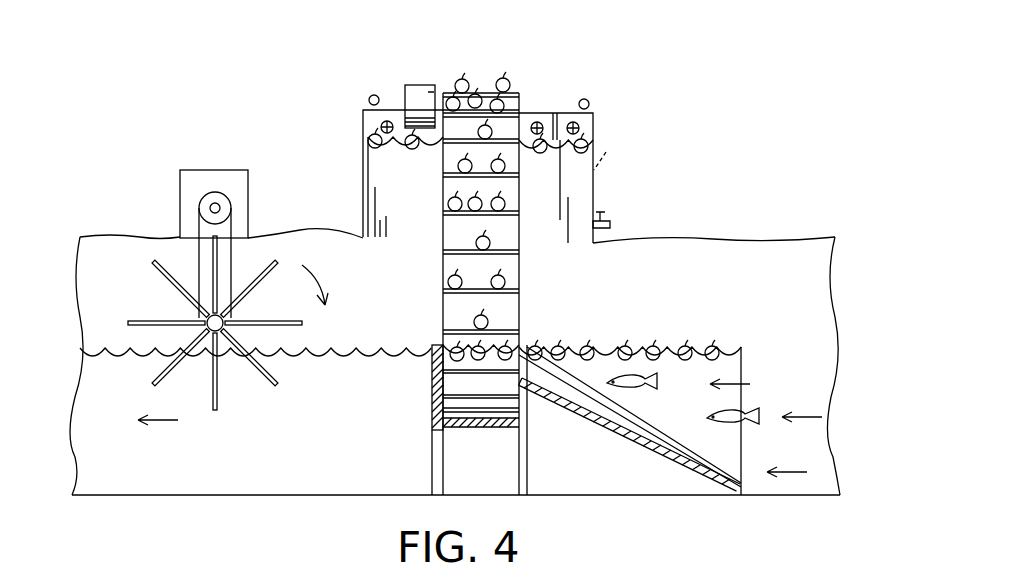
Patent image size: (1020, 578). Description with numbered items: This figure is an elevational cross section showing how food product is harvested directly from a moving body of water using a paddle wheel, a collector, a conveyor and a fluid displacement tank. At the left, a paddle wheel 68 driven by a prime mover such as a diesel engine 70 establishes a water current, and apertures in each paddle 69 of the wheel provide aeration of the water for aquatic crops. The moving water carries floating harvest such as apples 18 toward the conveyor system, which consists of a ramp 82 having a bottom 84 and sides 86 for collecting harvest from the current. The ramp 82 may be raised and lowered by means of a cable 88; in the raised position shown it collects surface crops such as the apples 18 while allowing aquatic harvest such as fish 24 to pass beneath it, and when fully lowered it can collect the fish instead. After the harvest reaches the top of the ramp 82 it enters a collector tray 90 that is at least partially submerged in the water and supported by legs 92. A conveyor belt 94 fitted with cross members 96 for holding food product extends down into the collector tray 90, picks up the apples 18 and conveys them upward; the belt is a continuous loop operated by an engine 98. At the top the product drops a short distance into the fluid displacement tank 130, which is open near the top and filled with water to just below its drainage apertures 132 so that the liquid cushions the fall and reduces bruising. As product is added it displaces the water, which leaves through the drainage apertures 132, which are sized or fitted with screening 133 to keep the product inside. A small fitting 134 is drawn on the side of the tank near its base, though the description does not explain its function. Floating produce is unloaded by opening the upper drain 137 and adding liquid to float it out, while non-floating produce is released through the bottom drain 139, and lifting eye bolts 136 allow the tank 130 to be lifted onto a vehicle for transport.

The apples 18 is at (500, 82).
The fish 24 is at (612, 374).
The paddle wheel 68 is at (203, 316).
The paddle 69 is at (262, 264).
The diesel engine 70 is at (196, 176).
The ramp 82 is at (743, 450).
The bottom 84 is at (643, 447).
The sides 86 is at (673, 382).
The cable 88 is at (627, 403).
The collector tray 90 is at (435, 381).
The legs 92 is at (520, 474).
The conveyor belt 94 is at (512, 278).
The cross members 96 is at (522, 335).
The engine 98 is at (412, 102).
The fluid displacement tank 130 is at (583, 187).
The drainage apertures 132 is at (577, 120).
The screening 133 is at (537, 121).
The valve 134 is at (612, 222).
The lifting eye bolts 136 is at (592, 104).
The upper drain 137 is at (606, 152).
The bottom drain 139 is at (363, 225).